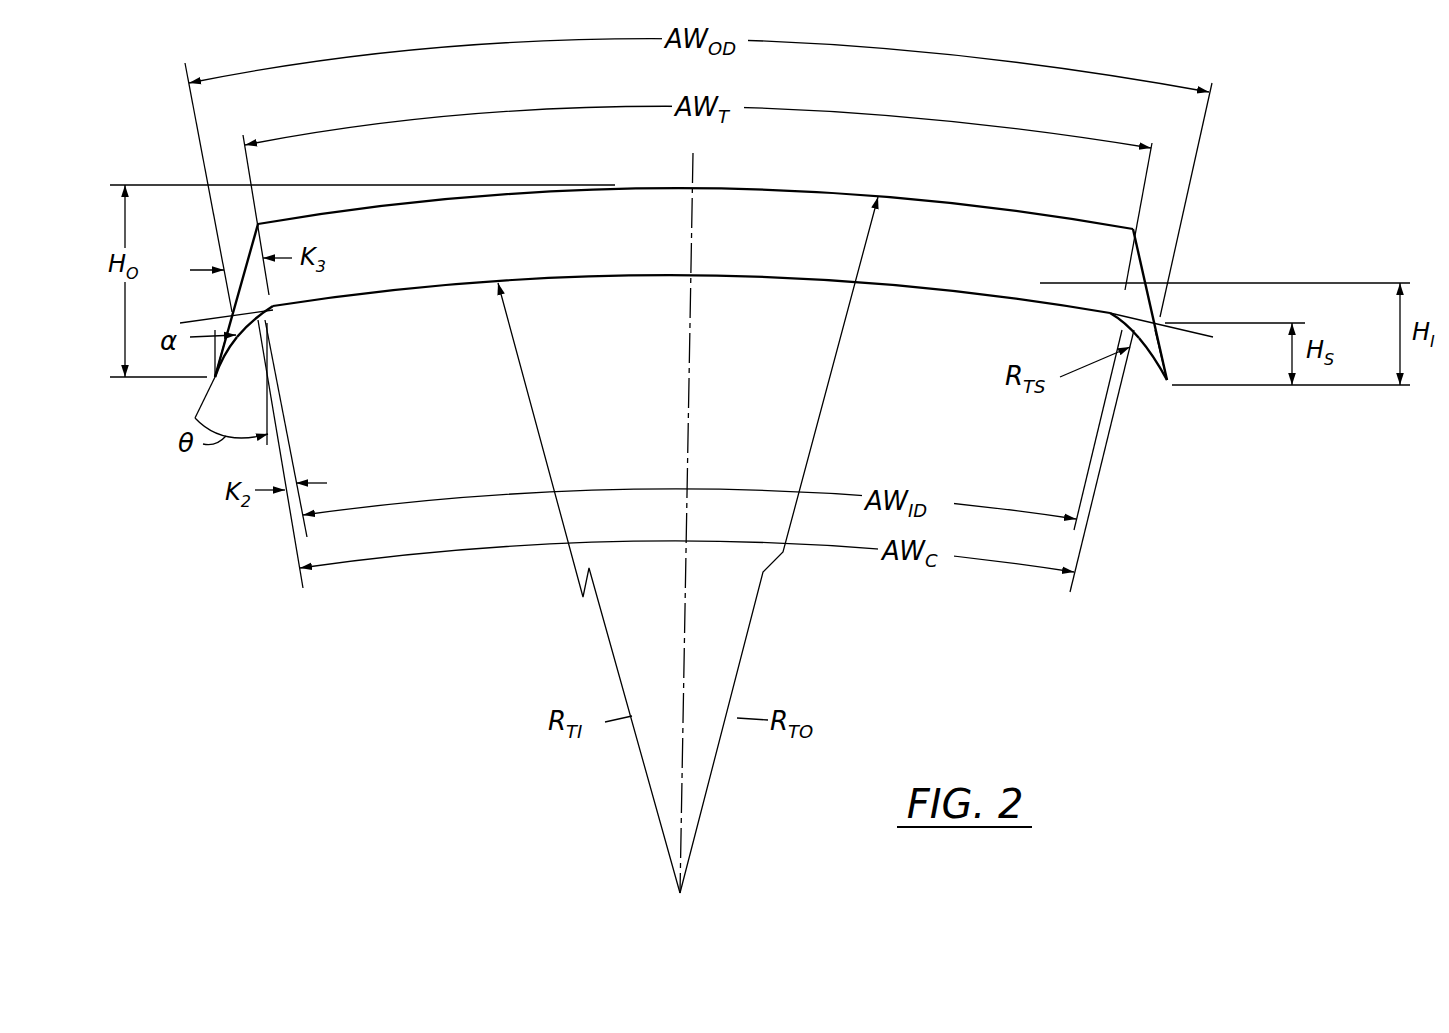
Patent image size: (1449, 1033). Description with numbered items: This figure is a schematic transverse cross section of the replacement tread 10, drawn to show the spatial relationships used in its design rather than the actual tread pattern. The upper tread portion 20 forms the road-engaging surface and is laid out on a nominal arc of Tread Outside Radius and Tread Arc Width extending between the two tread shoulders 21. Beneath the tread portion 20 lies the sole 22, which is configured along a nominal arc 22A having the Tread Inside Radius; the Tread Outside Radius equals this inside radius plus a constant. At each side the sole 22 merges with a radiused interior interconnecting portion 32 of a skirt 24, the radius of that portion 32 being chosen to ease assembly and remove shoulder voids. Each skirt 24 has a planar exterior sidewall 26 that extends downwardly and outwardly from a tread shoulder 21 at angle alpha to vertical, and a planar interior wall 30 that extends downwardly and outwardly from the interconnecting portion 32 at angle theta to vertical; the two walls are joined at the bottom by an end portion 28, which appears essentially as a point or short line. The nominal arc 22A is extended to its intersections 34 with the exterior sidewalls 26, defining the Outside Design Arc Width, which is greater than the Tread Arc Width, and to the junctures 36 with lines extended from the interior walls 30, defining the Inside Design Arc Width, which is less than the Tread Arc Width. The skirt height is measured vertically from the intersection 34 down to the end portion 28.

The replacement tread 10 is at (1268, 200).
The upper tread portion 20 is at (786, 188).
The tread shoulders 21 is at (257, 222).
The sole 22 is at (717, 279).
The nominal arc 22A is at (213, 318).
The skirts 24 is at (228, 360).
The exterior sidewall 26 is at (249, 252).
The end portion 28 is at (212, 382).
The interior wall 30 is at (248, 345).
The radiused interior interconnecting portion 32 is at (275, 312).
The intersections 34 is at (1162, 314).
The junctures 36 is at (276, 305).